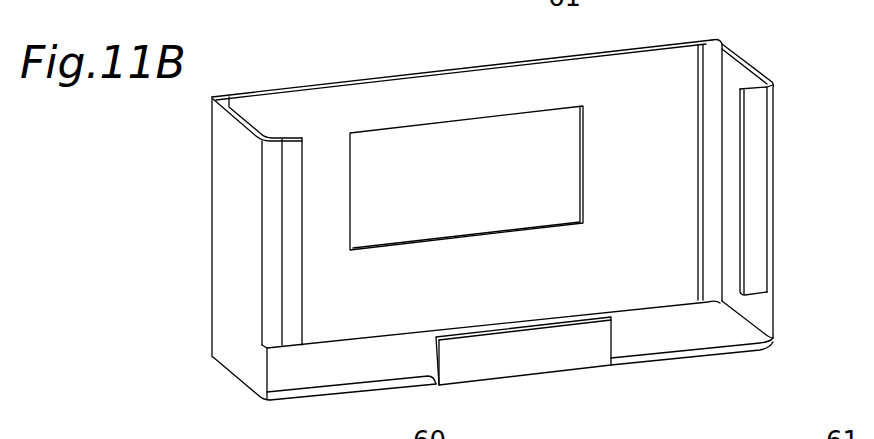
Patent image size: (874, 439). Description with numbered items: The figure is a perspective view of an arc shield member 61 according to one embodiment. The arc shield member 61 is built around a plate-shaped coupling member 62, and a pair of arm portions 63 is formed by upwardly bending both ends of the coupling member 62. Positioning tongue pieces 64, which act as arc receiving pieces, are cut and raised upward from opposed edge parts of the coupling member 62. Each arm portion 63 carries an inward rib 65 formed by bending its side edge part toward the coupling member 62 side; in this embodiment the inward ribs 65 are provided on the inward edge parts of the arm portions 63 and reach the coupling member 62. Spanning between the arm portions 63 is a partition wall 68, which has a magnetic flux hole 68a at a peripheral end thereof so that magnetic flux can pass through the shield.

The arc shield member 61 is at (740, 42).
The coupling member 62 is at (690, 330).
The arm portion 63 is at (240, 202).
The positioning tongue piece 64 is at (543, 350).
The inward rib 65 is at (300, 280).
The partition wall 68 is at (645, 80).
The magnetic flux hole 68a is at (425, 155).